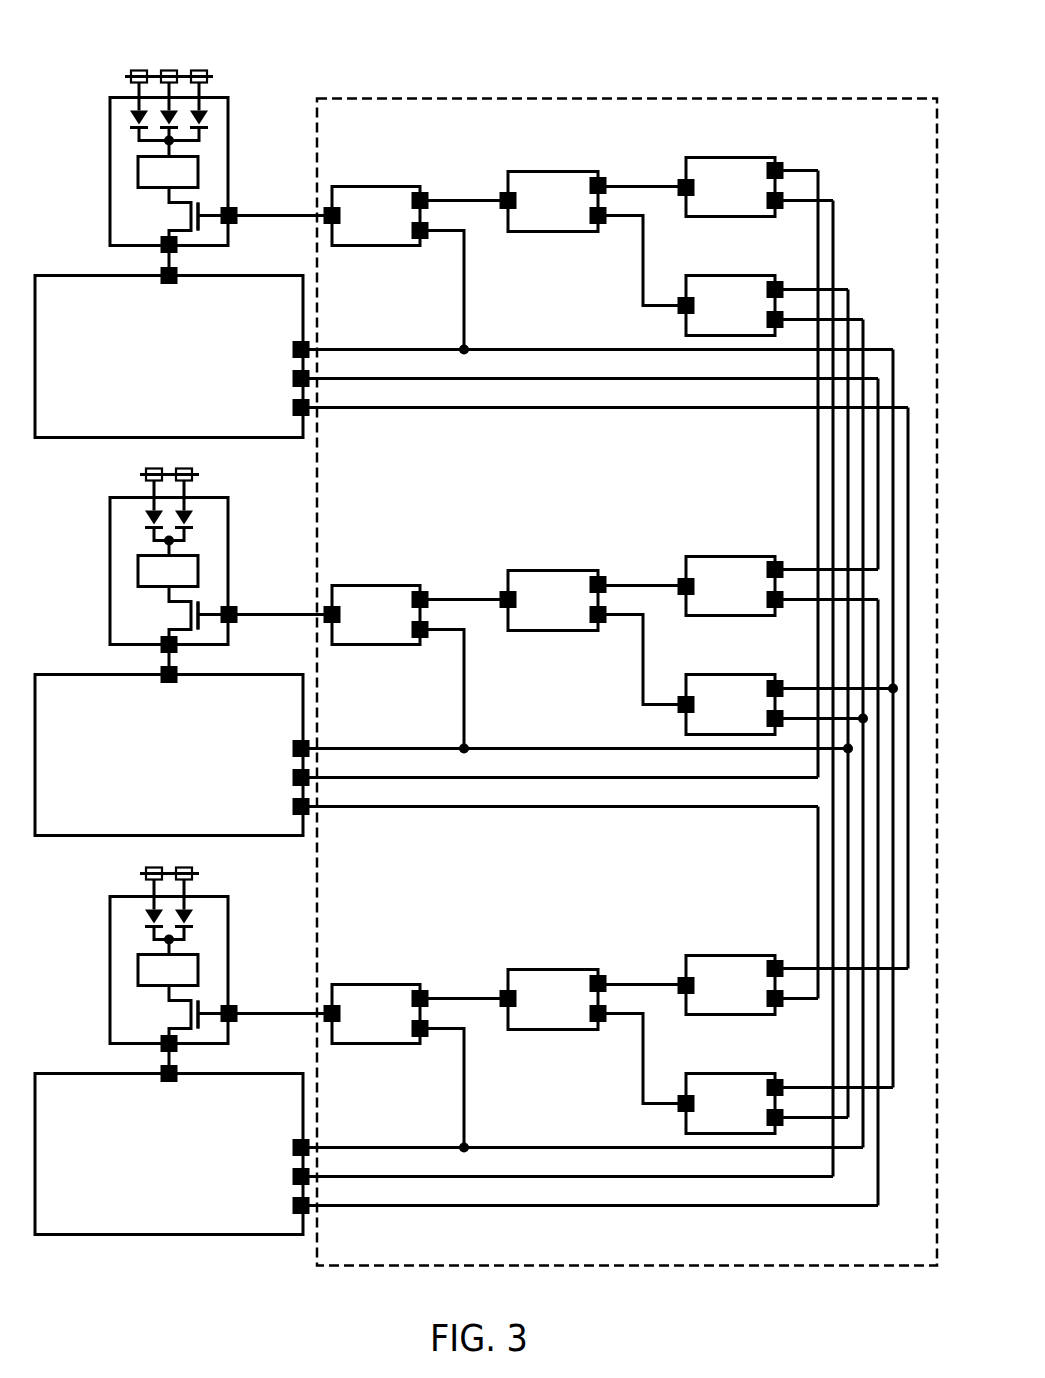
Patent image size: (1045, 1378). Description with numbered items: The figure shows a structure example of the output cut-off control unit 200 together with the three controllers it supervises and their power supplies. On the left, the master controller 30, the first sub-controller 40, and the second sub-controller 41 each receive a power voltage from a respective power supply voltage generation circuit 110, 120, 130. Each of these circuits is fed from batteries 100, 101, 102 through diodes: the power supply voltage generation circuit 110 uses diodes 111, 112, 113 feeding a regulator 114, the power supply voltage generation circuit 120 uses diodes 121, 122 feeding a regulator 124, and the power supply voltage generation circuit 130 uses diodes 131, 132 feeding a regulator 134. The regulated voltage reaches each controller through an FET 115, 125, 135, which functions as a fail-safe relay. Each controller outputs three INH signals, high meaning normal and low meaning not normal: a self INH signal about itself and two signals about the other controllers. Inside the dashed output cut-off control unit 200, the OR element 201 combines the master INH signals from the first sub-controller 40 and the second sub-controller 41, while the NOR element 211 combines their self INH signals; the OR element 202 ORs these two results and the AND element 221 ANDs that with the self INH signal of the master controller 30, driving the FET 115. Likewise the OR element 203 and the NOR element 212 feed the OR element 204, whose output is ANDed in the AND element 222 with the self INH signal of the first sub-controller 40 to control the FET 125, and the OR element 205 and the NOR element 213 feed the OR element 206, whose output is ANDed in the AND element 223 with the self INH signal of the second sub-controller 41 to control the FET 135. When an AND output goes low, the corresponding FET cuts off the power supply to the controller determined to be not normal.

The master controller 30 is at (75, 278).
The first sub-controller 40 is at (75, 677).
The second sub-controller 41 is at (75, 1076).
The battery 100 is at (131, 78).
The battery 101 is at (167, 73).
The battery 102 is at (209, 78).
The power supply voltage generation circuit 110 is at (229, 155).
The diode 111 is at (132, 125).
The diode 112 is at (172, 116).
The diode 113 is at (207, 125).
The regulator 114 is at (138, 171).
The FET 115 is at (200, 211).
The power supply voltage generation circuit 120 is at (229, 555).
The diode 121 is at (146, 525).
The diode 122 is at (192, 525).
The regulator 124 is at (138, 570).
The FET 125 is at (200, 611).
The power supply voltage generation circuit 130 is at (229, 954).
The diode 131 is at (146, 924).
The diode 132 is at (192, 924).
The regulator 134 is at (138, 969).
The FET 135 is at (200, 1010).
The output cut-off control unit 200 is at (632, 100).
The OR element 201 is at (750, 160).
The OR element 202 is at (572, 174).
The OR element 203 is at (750, 559).
The OR element 204 is at (572, 573).
The OR element 205 is at (750, 958).
The OR element 206 is at (572, 972).
The NOR element 211 is at (750, 278).
The NOR element 212 is at (750, 677).
The NOR element 213 is at (750, 1076).
The AND element 221 is at (397, 189).
The AND element 222 is at (397, 588).
The AND element 223 is at (397, 987).